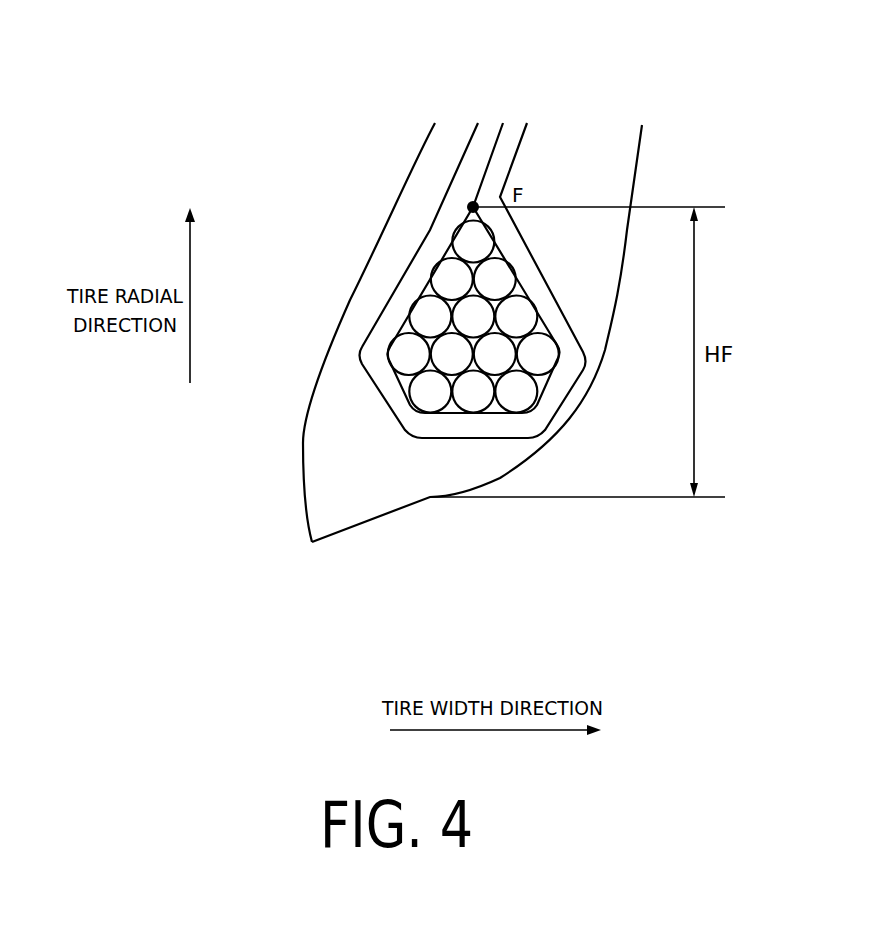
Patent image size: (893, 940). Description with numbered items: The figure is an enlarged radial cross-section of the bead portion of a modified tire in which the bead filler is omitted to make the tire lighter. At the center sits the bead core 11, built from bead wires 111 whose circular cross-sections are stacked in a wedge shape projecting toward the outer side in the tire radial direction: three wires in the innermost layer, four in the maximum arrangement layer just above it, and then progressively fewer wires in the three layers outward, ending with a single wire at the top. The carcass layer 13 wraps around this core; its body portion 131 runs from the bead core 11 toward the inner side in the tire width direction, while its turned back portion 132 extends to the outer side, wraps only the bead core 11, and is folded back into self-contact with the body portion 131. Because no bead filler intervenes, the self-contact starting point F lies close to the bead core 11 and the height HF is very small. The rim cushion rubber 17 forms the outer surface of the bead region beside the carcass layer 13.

The bead core 11 is at (414, 292).
The bead wire 111 is at (450, 277).
The carcass layer 13 is at (433, 73).
The body portion 131 is at (490, 128).
The turned back portion 132 is at (515, 128).
The rim cushion rubber 17 is at (625, 128).